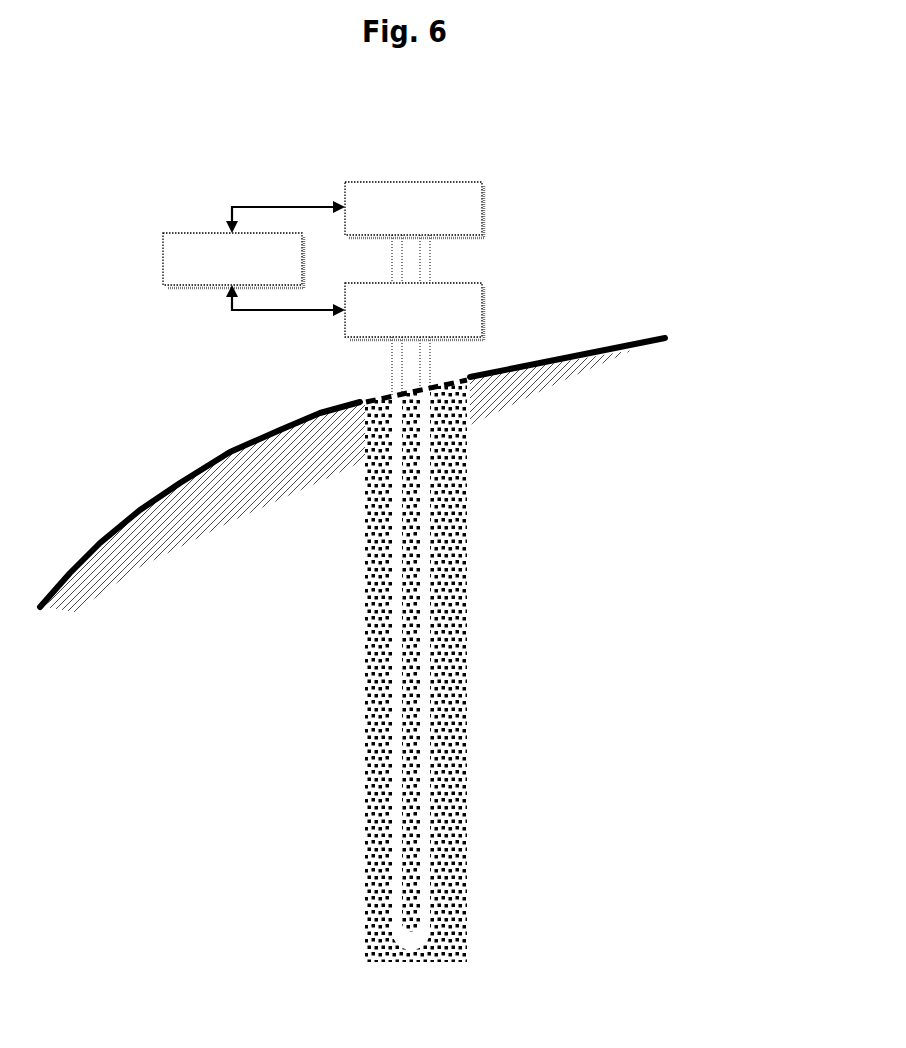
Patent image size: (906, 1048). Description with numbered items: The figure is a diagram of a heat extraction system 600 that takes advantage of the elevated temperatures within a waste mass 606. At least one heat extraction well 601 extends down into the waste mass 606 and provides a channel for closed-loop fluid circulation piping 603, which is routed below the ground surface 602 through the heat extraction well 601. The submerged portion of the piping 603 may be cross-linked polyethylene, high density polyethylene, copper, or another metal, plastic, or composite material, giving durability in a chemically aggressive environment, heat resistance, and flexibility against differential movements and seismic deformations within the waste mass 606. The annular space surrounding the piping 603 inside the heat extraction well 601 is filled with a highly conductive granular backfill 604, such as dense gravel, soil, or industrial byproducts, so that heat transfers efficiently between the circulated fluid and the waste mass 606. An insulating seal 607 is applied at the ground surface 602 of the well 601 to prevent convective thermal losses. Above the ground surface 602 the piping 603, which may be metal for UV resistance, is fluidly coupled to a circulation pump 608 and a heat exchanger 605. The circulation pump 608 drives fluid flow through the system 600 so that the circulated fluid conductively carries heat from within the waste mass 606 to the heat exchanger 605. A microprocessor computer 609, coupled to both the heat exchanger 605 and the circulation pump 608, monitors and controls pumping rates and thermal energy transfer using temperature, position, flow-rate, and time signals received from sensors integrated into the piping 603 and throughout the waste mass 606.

The heat extraction system 600 is at (654, 163).
The heat extraction well 601 is at (358, 768).
The ground surface 602 is at (653, 347).
The closed-loop fluid circulation piping 603 is at (400, 543).
The highly conductive granular backfill 604 is at (447, 940).
The heat exchanger 605 is at (439, 210).
The waste mass 606 is at (348, 541).
The insulating seal 607 is at (365, 399).
The circulation pump 608 is at (439, 311).
The microprocessor computer 609 is at (206, 260).